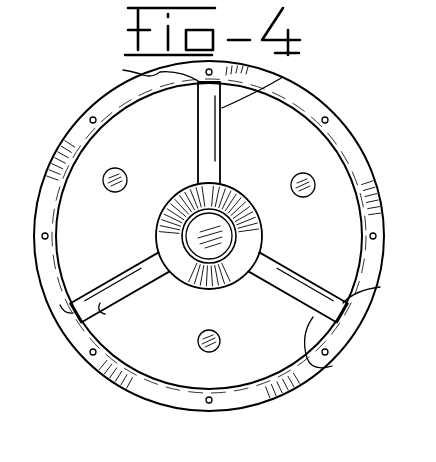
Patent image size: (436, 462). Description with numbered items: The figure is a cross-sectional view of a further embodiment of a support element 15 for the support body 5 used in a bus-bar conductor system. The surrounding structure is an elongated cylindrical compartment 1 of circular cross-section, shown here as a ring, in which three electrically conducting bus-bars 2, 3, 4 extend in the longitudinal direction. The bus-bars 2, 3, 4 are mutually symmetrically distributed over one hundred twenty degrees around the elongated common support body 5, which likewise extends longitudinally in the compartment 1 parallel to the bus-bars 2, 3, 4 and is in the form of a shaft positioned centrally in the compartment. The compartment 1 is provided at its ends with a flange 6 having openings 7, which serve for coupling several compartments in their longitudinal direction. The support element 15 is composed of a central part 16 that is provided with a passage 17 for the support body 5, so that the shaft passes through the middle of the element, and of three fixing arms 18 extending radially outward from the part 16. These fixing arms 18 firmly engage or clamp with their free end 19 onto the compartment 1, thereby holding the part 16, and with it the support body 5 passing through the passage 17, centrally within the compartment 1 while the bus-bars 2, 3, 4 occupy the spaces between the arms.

The compartment 1 is at (362, 182).
The bus-bar 2 is at (309, 195).
The bus-bar 3 is at (118, 192).
The bus-bar 4 is at (220, 341).
The support body 5 is at (202, 230).
The flange 6 is at (143, 388).
The opening 7 is at (210, 404).
The support element 15 is at (225, 158).
The part 16 is at (183, 272).
The passage 17 is at (237, 235).
The fixing arm 18 is at (283, 77).
The free end 19 is at (123, 70).